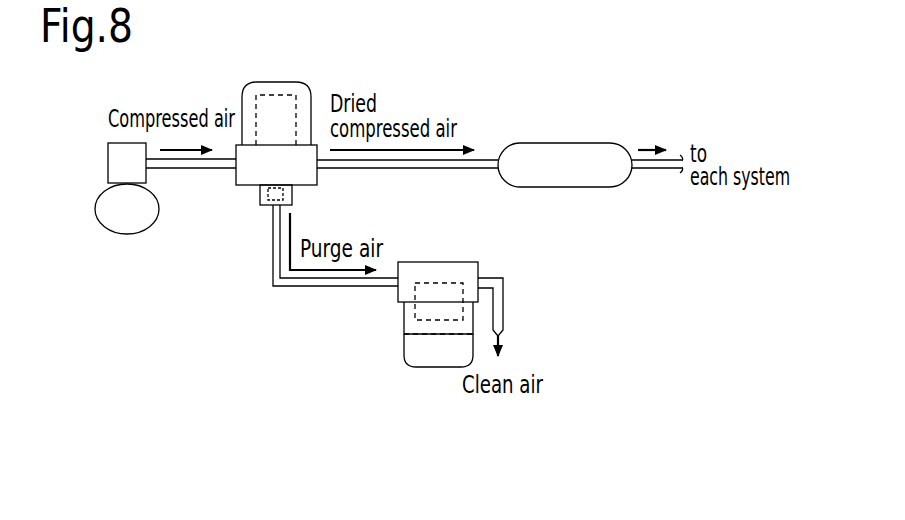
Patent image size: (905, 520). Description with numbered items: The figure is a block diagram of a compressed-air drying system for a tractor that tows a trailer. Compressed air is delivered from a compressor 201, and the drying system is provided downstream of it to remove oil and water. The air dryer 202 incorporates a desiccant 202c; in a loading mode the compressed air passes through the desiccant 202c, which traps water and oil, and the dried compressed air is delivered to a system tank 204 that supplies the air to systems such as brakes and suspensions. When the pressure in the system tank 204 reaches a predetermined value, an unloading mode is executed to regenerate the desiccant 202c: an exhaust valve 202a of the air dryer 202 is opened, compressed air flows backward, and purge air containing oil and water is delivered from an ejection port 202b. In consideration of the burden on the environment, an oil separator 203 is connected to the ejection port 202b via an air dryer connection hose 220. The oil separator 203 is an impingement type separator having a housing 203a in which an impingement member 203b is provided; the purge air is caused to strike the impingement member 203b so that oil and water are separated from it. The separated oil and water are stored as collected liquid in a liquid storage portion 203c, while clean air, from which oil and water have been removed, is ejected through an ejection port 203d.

The compressor 201 is at (108, 162).
The air dryer 202 is at (312, 88).
The exhaust valve 202a is at (268, 193).
The ejection port 202b is at (267, 206).
The desiccant 202c is at (277, 93).
The oil separator 203 is at (473, 260).
The housing 203a is at (404, 316).
The impingement member 203b is at (430, 283).
The liquid storage portion 203c is at (404, 355).
The ejection port 203d is at (504, 297).
The system tank 204 is at (585, 143).
The air dryer connection hose 220 is at (272, 237).